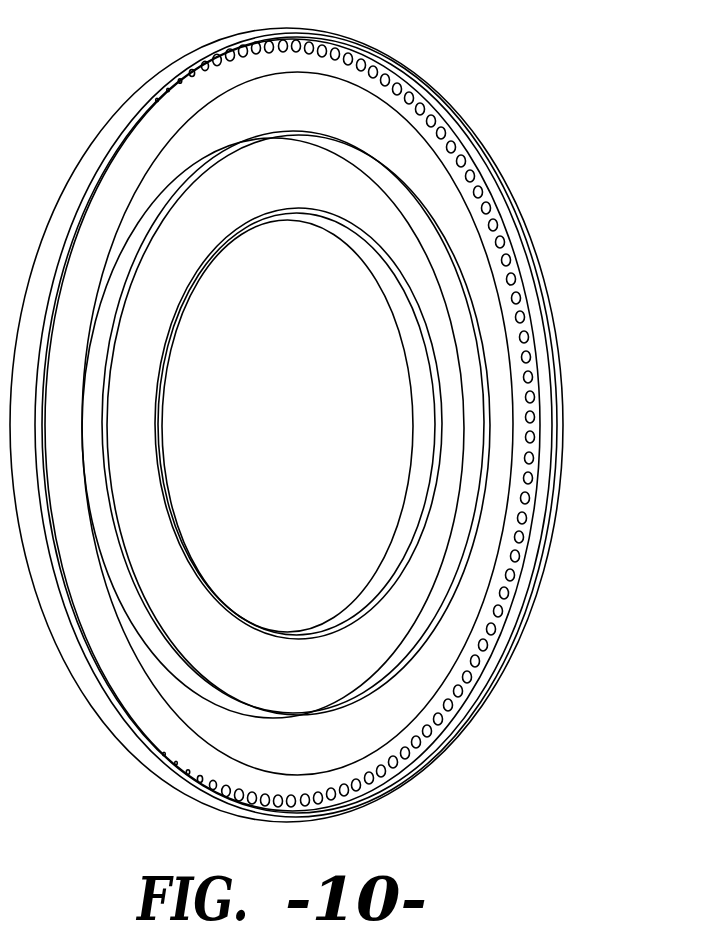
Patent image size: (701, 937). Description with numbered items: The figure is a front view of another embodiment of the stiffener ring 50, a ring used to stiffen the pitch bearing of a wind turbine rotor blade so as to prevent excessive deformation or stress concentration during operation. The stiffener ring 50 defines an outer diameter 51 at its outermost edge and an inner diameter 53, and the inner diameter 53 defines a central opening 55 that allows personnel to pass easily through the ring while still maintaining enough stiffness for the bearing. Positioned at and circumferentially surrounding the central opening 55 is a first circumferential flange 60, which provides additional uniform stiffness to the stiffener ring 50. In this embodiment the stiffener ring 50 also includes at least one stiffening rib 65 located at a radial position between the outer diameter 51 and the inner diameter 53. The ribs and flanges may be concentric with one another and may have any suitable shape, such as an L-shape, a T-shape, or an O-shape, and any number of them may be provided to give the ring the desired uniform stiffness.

The stiffener ring 50 is at (322, 423).
The outer diameter 51 is at (542, 347).
The inner diameter 53 is at (415, 492).
The central opening 55 is at (305, 382).
The first circumferential flange 60 is at (388, 562).
The stiffening rib 65 is at (472, 465).